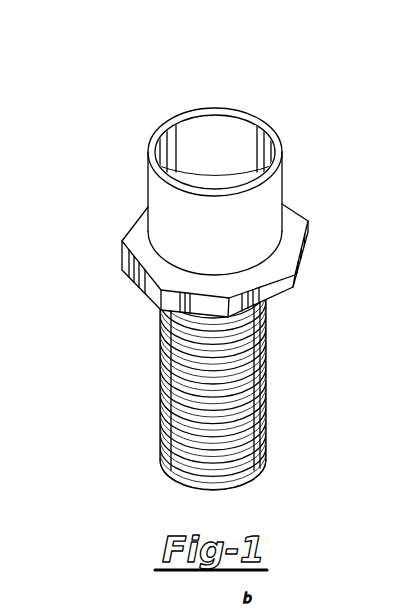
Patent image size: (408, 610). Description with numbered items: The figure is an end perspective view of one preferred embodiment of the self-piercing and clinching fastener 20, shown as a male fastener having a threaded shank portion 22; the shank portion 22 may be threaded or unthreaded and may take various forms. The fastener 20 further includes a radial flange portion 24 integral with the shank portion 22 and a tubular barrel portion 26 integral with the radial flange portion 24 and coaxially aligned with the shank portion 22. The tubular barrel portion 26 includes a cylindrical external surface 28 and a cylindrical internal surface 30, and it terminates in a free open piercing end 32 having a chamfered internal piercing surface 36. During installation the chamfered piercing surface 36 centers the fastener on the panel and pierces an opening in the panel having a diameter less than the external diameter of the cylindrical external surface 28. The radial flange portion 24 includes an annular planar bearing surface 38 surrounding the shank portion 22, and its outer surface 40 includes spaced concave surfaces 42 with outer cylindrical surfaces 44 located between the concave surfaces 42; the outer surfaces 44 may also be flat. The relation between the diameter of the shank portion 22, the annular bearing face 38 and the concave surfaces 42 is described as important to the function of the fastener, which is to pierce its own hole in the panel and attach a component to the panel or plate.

The self-piercing and clinching fastener 20 is at (153, 410).
The threaded shank portion 22 is at (227, 413).
The radial flange portion 24 is at (107, 250).
The tubular barrel portion 26 is at (280, 190).
The cylindrical external surface 28 is at (156, 198).
The cylindrical internal surface 30 is at (188, 124).
The free open piercing end 32 is at (252, 113).
The chamfered internal piercing surface 36 is at (225, 108).
The annular planar bearing surface 38 is at (280, 298).
The outer surface 40 is at (307, 238).
The concave surfaces 42 is at (148, 283).
The outer cylindrical surfaces 44 is at (263, 360).